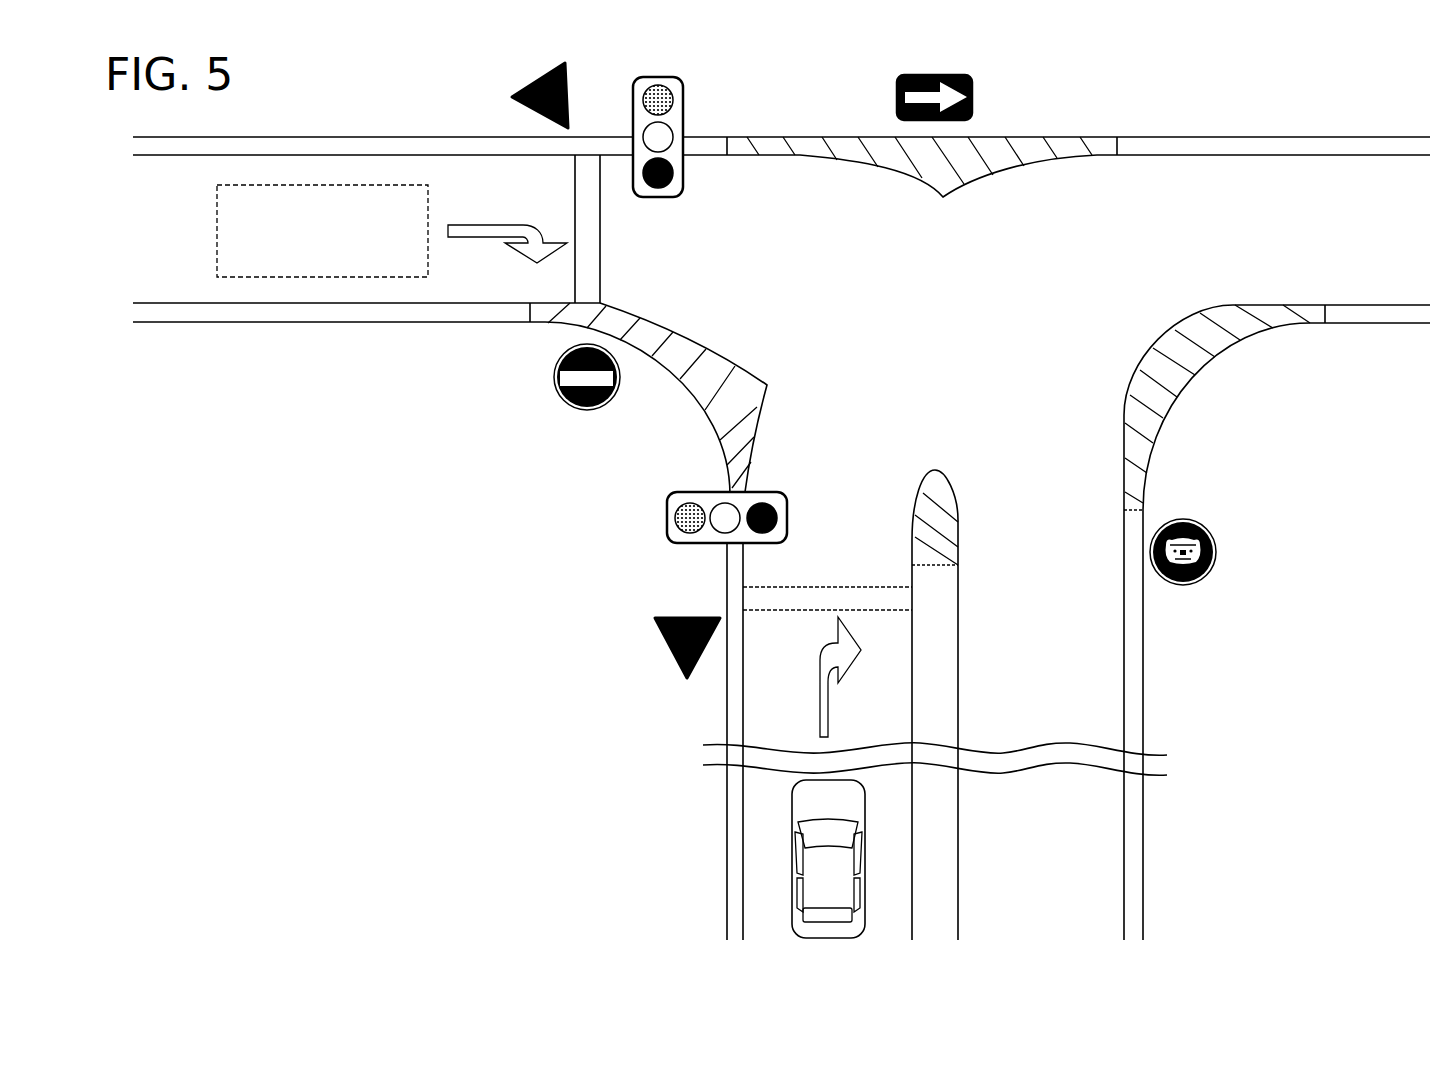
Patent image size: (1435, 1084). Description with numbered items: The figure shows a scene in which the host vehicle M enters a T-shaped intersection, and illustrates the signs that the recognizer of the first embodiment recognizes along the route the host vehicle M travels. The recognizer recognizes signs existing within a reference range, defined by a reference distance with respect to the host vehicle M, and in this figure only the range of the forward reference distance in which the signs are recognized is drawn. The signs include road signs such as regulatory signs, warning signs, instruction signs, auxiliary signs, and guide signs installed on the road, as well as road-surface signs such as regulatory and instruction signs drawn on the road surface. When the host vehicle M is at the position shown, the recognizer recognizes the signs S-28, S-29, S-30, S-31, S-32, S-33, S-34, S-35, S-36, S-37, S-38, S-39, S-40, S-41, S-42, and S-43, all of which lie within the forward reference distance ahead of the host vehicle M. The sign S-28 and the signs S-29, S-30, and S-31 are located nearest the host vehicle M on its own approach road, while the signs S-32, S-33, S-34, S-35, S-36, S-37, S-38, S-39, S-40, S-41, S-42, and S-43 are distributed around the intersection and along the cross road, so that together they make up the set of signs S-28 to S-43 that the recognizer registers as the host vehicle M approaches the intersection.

The sign S-28 is at (820, 712).
The sign S-29 is at (657, 654).
The sign S-30 is at (843, 587).
The sign S-31 is at (667, 516).
The sign S-32 is at (960, 492).
The sign S-33 is at (733, 362).
The sign S-34 is at (551, 378).
The sign S-35 is at (913, 184).
The sign S-36 is at (973, 97).
The sign S-37 is at (684, 97).
The sign S-38 is at (601, 248).
The sign S-39 is at (514, 94).
The sign S-40 is at (496, 225).
The sign S-41 is at (320, 277).
The sign S-42 is at (1140, 356).
The sign S-43 is at (1216, 553).
The host vehicle M is at (790, 865).